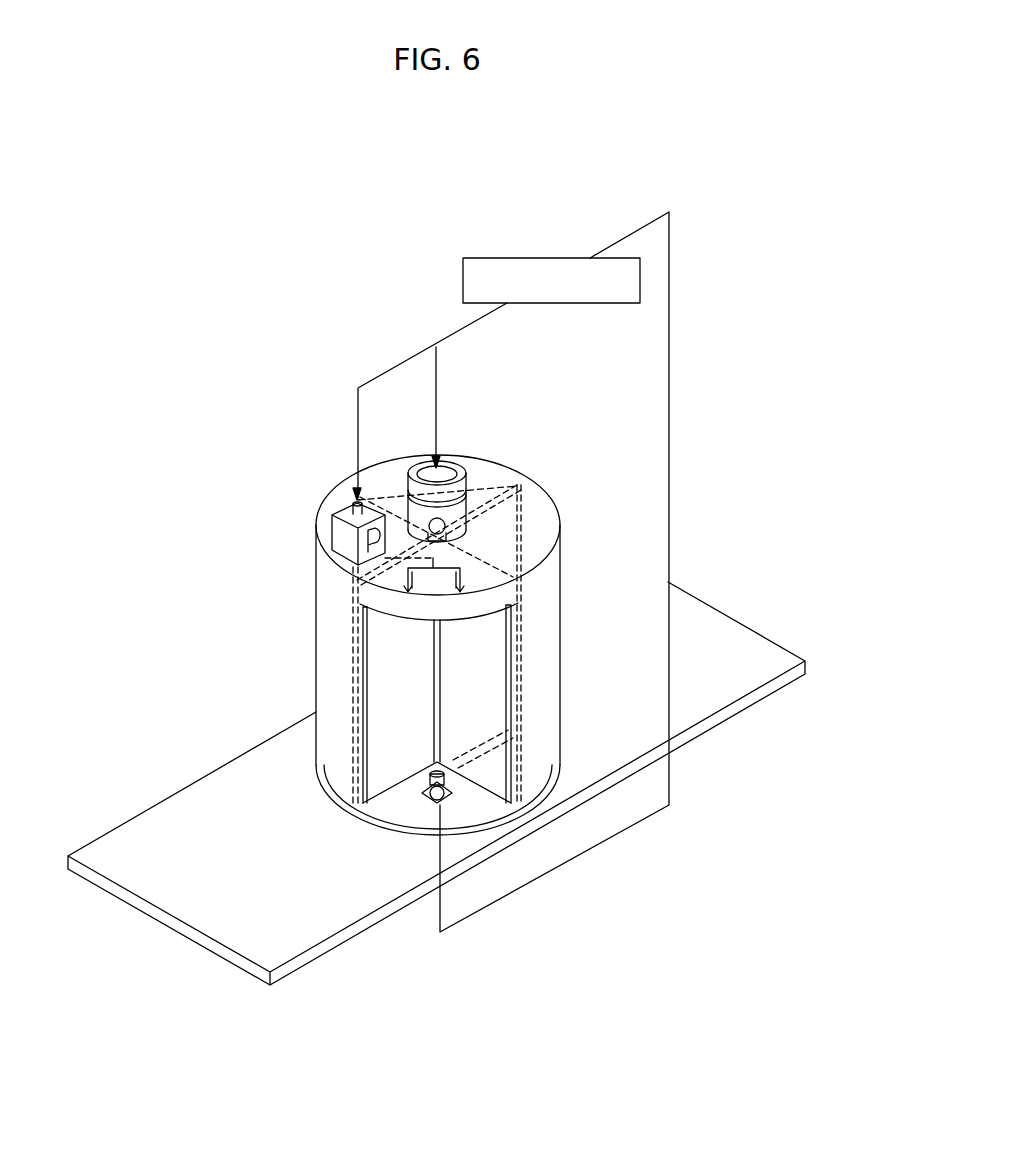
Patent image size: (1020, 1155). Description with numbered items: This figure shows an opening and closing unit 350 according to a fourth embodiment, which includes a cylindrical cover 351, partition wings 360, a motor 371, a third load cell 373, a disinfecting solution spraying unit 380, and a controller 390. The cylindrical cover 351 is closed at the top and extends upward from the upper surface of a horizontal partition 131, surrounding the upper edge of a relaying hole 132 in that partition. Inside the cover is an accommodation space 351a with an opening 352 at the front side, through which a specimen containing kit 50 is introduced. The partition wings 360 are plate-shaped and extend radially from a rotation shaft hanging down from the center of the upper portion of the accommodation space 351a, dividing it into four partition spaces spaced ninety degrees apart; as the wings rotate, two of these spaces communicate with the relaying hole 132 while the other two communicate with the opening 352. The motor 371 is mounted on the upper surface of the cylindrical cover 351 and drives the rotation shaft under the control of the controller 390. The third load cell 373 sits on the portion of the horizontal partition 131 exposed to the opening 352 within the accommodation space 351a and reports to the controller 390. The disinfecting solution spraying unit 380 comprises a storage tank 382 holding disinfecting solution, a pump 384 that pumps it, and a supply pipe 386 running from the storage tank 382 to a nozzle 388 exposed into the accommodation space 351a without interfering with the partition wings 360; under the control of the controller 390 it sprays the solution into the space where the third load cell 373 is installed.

The horizontal partition 131 is at (238, 925).
The relaying hole 132 is at (487, 777).
The specimen containing kit 50 is at (427, 803).
The opening and closing unit 350 is at (597, 672).
The cylindrical cover 351 is at (337, 787).
The accommodation space 351a is at (402, 704).
The opening 352 is at (384, 668).
The partition wings 360 is at (485, 674).
The motor 371 is at (461, 470).
The third load cell 373 is at (437, 806).
The disinfecting solution spraying unit 380 is at (318, 520).
The storage tank 382 is at (337, 509).
The pump 384 is at (358, 540).
The supply pipe 386 is at (383, 562).
The nozzle 388 is at (405, 586).
The controller 390 is at (558, 257).